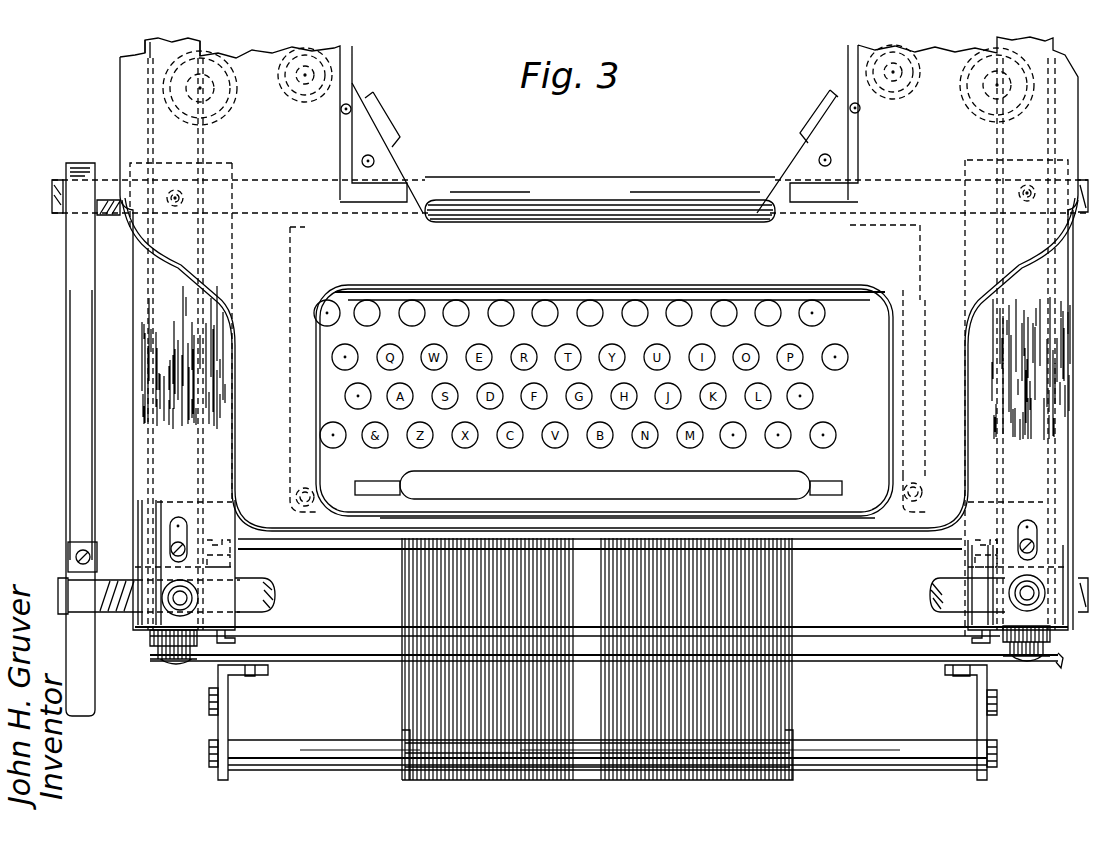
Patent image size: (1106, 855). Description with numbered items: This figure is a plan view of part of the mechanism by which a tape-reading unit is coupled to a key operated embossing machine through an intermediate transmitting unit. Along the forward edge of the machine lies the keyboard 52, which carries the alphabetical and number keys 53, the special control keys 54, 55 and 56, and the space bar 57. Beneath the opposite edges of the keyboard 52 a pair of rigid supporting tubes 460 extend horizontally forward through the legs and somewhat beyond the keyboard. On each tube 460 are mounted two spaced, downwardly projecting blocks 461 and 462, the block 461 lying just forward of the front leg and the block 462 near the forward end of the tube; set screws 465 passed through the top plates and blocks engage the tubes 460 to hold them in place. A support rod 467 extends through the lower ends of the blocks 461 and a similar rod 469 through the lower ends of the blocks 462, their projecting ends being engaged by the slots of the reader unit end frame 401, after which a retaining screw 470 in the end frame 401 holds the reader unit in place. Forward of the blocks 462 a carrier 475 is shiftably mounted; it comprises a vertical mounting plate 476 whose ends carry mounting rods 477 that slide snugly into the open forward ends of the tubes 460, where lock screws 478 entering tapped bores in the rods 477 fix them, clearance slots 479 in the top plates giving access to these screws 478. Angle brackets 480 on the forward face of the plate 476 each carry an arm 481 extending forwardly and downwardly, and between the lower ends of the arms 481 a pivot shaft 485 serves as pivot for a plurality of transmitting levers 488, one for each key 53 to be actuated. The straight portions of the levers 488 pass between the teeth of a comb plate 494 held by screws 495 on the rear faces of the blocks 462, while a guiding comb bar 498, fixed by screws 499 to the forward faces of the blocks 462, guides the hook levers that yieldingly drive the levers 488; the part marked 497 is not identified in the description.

The end frame 401 is at (65, 342).
The support rod 467 is at (109, 185).
The block 461 is at (228, 163).
The supporting tube 460 is at (966, 252).
The keyboard 52 is at (795, 527).
The alphabetical and number keys 53 is at (635, 300).
The special control key 54 is at (320, 300).
The special control key 55 is at (345, 356).
The special control key 56 is at (333, 433).
The space bar 57 is at (680, 483).
The clearance or access slot 479 is at (183, 522).
The lock screw 478 is at (183, 548).
The screws 495 is at (232, 540).
The retaining screw 470 is at (90, 556).
The block 462 is at (157, 560).
The rod 469 is at (255, 592).
The comb plate 494 is at (362, 550).
The guiding comb bar 498 is at (290, 627).
The screws 499 is at (237, 645).
The set screws 465 is at (165, 600).
The mounting rod 477 is at (180, 655).
The angle bracket 480 is at (230, 702).
The arm 481 is at (217, 728).
The pivot shaft 485 is at (305, 755).
The type bar comb 497 is at (405, 683).
The transmitting lever 488 is at (405, 705).
The mounting plate 476 is at (860, 658).
The carrier 475 is at (1061, 670).